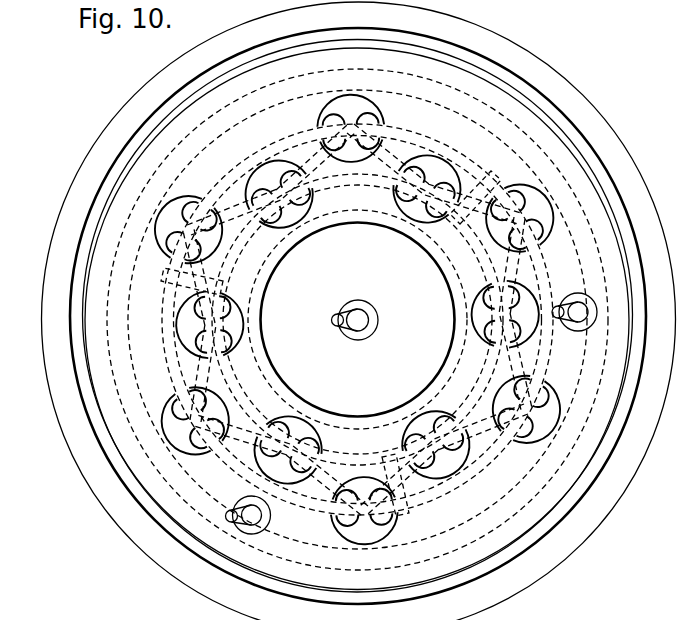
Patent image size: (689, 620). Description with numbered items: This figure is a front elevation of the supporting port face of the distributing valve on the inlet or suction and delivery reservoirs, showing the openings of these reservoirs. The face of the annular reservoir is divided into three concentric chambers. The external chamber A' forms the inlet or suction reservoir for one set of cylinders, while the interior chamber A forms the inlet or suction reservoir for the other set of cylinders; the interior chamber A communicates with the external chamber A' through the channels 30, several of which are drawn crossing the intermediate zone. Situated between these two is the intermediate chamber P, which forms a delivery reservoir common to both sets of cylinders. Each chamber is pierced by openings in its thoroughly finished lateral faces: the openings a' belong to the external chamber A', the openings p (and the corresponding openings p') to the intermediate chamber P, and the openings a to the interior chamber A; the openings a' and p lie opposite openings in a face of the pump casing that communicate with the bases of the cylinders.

The channels 30 is at (408, 505).
The interior chamber A is at (212, 305).
The external chamber A' is at (188, 222).
The intermediate chamber P is at (276, 194).
The opening a is at (417, 208).
The opening a' is at (350, 110).
The opening p is at (351, 150).
The outer half of spindle unit p' is at (435, 173).